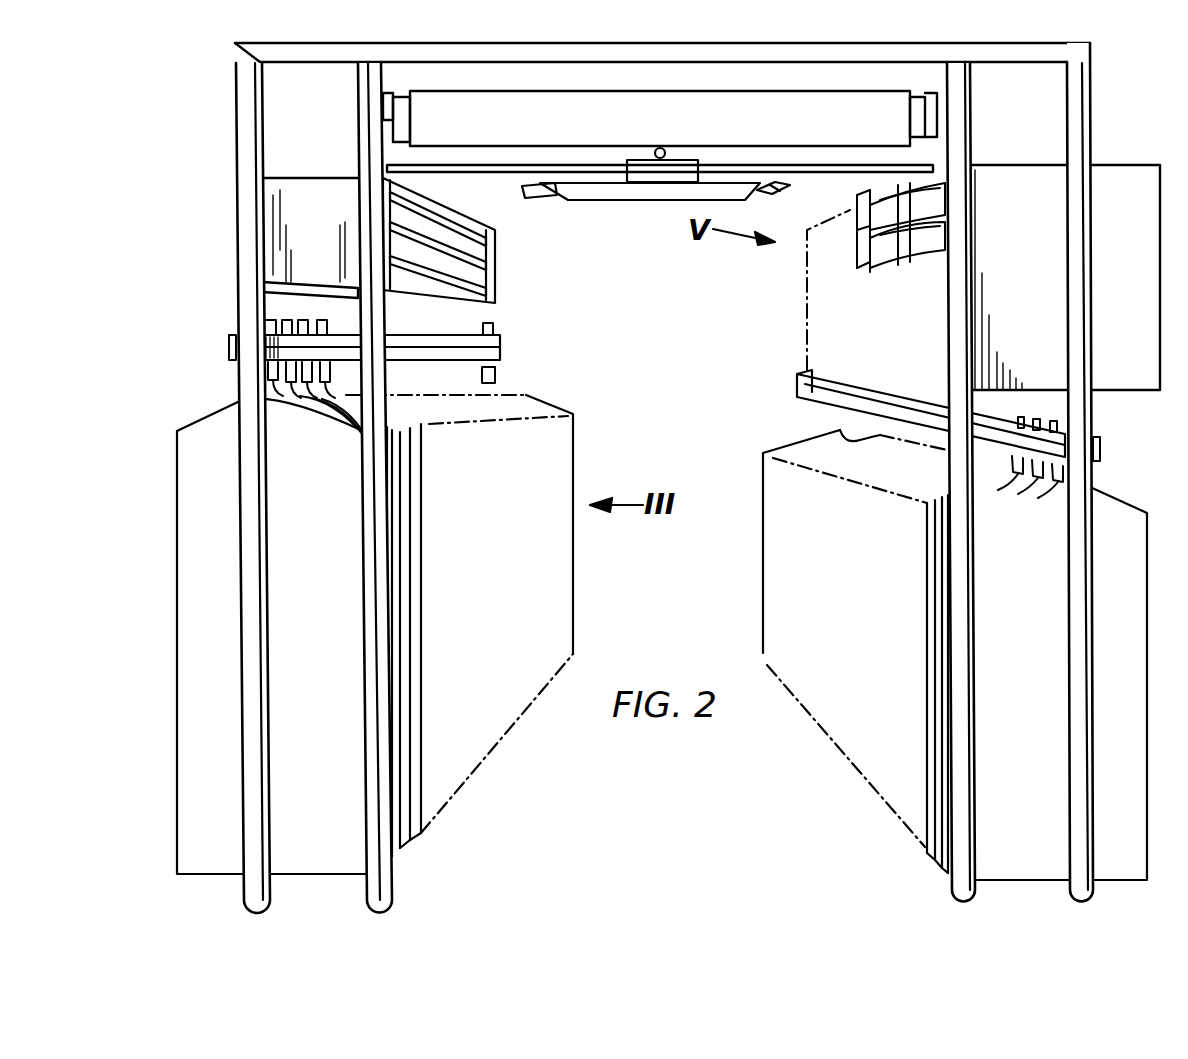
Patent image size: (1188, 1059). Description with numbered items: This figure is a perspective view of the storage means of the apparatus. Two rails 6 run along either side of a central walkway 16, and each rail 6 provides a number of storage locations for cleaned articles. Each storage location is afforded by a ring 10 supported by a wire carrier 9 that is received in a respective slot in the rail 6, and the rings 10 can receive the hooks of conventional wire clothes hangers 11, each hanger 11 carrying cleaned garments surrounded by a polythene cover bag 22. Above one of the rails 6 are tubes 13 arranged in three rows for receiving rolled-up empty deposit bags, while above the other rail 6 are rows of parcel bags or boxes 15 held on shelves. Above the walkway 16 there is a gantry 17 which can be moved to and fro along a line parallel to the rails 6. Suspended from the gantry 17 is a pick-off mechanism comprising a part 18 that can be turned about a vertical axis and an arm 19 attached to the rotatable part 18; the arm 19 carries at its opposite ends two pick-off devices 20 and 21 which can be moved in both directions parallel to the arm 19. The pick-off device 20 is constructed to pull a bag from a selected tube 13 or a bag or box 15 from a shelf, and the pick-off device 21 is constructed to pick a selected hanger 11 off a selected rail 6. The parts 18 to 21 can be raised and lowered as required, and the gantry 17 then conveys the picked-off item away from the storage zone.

The rail 6 is at (503, 348).
The carrier 9 is at (303, 320).
The ring 10 is at (268, 368).
The clothes hanger 11 is at (323, 391).
The tubes 13 is at (383, 203).
The parcel bags or boxes 15 is at (945, 170).
The central walkway 16 is at (680, 411).
The gantry 17 is at (482, 127).
The rotatable part 18 is at (672, 172).
The arm 19 is at (620, 200).
The pick-off device 20 is at (790, 190).
The pick-off device 21 is at (553, 200).
The polythene cover bag 22 is at (417, 492).